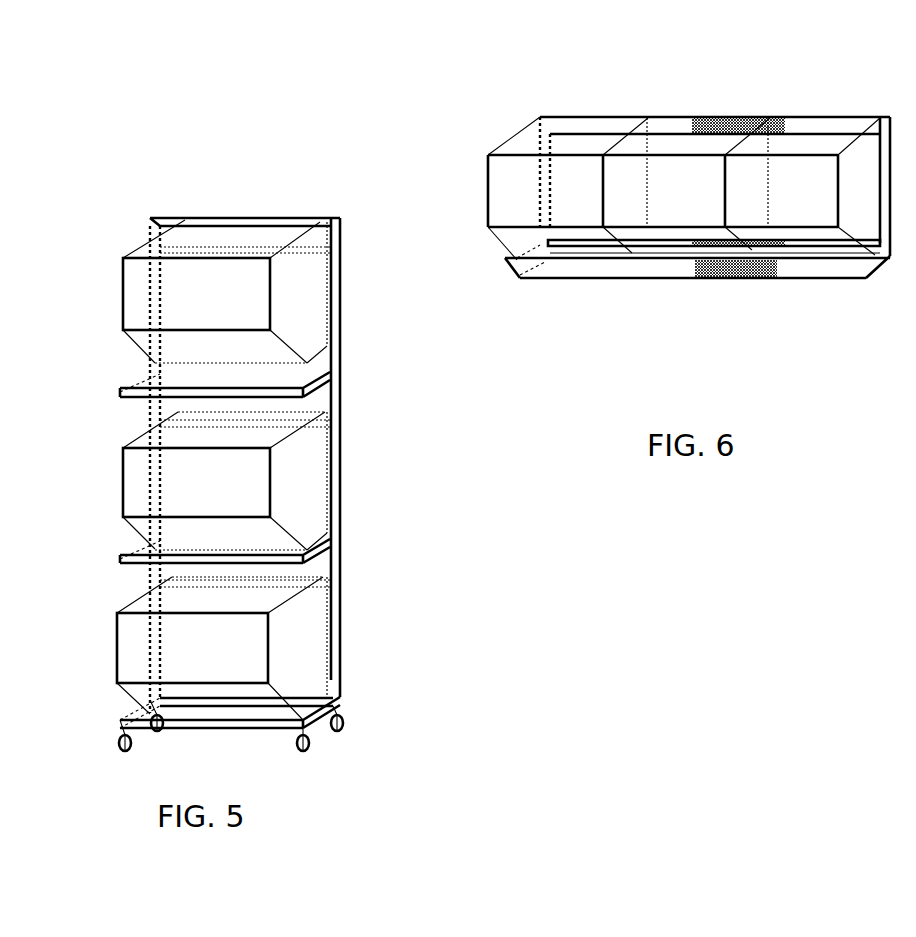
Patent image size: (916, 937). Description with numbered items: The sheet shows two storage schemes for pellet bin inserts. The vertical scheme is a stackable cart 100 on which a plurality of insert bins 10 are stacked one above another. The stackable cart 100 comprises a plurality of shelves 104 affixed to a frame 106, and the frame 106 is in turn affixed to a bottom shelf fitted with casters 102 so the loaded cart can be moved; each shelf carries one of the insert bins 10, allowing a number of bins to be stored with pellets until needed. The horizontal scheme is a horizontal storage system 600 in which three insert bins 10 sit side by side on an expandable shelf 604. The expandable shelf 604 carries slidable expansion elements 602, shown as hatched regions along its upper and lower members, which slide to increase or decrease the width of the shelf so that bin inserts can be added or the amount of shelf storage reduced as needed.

In FIG. 5, the insert bin 10 is at (315, 307).
In FIG. 6, the insert bin 10 is at (598, 209).
In FIG. 5, the stackable cart 100 is at (360, 605).
In FIG. 5, the casters 102 is at (350, 718).
In FIG. 5, the shelves 104 is at (333, 380).
In FIG. 5, the frame 106 is at (343, 244).
In FIG. 6, the horizontal storage system 600 is at (782, 285).
In FIG. 6, the slidable expansion elements 602 is at (773, 118).
In FIG. 6, the expandable shelf 604 is at (600, 268).